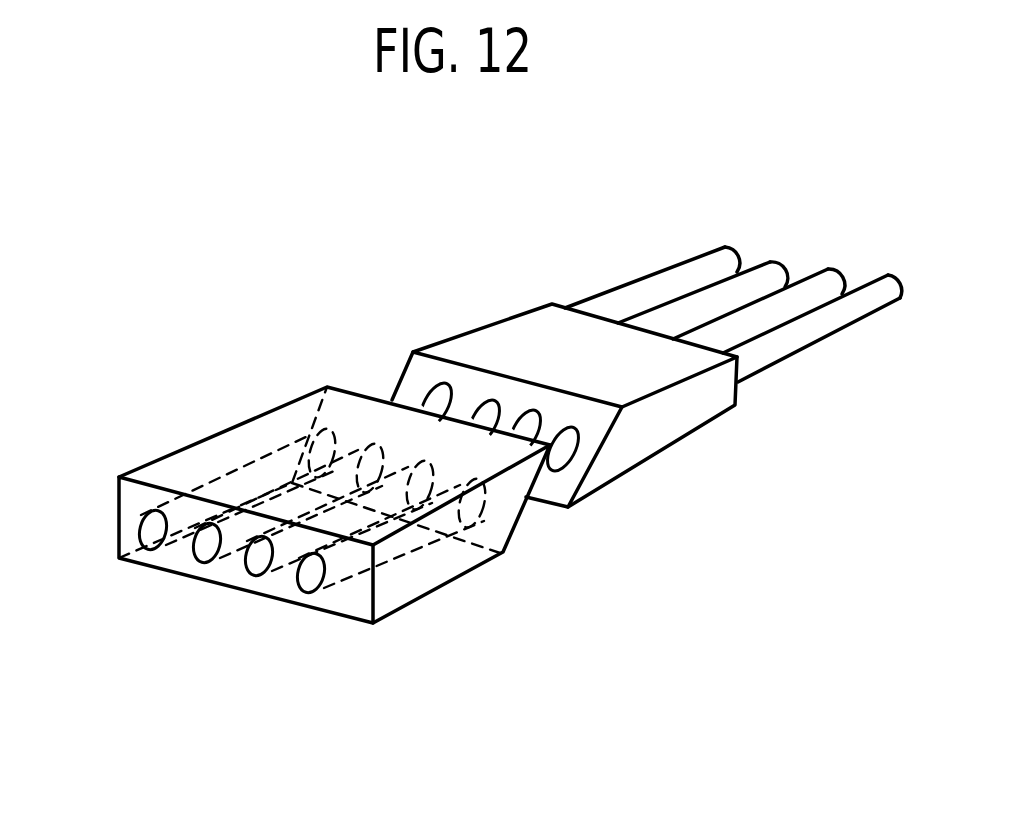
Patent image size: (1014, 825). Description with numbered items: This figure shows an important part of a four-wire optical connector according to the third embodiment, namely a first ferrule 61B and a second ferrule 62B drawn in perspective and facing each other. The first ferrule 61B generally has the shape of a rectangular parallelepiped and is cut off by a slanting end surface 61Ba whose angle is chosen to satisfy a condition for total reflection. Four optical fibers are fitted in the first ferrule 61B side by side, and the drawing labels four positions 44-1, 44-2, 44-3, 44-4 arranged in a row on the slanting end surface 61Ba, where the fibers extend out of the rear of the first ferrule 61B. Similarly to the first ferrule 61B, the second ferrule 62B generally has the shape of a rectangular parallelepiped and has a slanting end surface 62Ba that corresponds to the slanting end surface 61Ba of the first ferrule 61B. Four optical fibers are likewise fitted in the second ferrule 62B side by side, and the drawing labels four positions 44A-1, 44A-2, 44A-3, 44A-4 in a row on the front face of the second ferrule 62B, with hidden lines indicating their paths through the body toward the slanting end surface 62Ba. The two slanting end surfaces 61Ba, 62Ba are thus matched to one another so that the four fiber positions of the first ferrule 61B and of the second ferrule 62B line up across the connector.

The optical fiber hole 44-1 is at (440, 393).
The optical fiber hole 44-2 is at (495, 403).
The optical fiber hole 44-3 is at (520, 415).
The optical fiber hole 44-4 is at (566, 425).
The optical fiber hole 44A-1 is at (152, 535).
The optical fiber hole 44A-2 is at (208, 548).
The optical fiber hole 44A-3 is at (258, 563).
The optical fiber hole 44A-4 is at (310, 577).
The second ferrule 62B is at (438, 590).
The slanting end surface 62Ba is at (520, 520).
The first ferrule 61B is at (693, 433).
The slanting end surface 61Ba is at (592, 443).